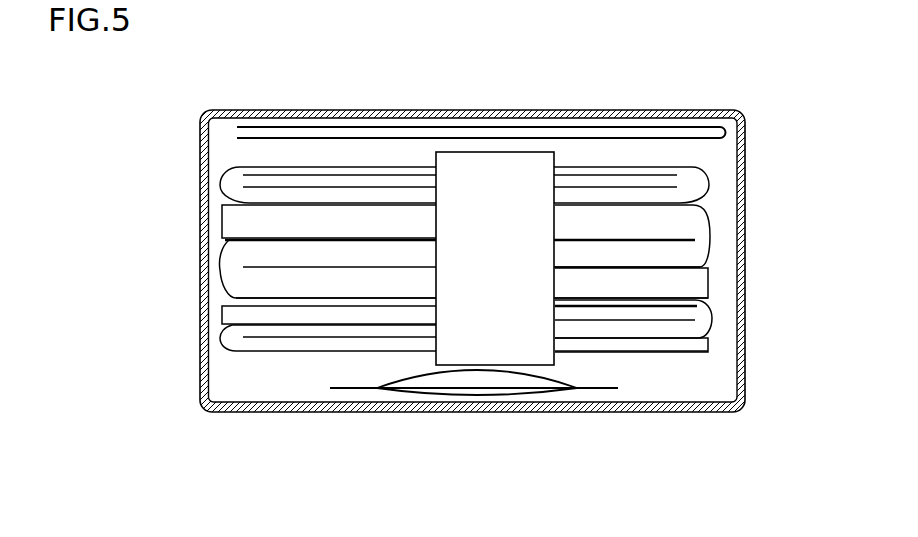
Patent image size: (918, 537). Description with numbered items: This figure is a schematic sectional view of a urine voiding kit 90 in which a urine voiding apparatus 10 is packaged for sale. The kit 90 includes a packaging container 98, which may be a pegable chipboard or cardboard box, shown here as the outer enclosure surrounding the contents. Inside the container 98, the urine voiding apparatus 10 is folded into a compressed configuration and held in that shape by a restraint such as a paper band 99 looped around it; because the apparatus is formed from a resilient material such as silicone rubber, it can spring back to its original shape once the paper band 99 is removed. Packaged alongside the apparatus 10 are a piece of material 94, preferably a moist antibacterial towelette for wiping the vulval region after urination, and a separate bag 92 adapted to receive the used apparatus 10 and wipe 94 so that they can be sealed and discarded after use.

The urine voiding apparatus 10 is at (715, 280).
The urine voiding kit 90 is at (747, 318).
The bag 92 is at (637, 126).
The piece of material 94 is at (422, 393).
The packaging container 98 is at (743, 130).
The paper band 99 is at (472, 153).